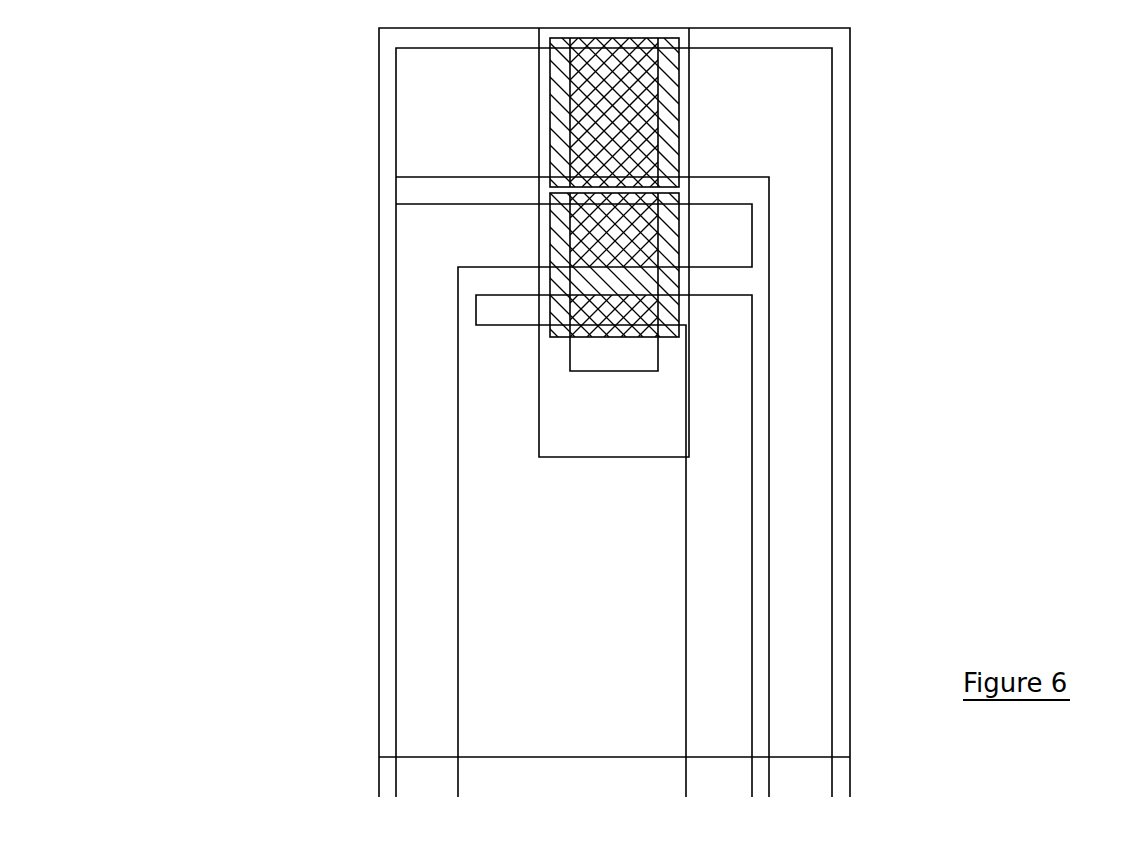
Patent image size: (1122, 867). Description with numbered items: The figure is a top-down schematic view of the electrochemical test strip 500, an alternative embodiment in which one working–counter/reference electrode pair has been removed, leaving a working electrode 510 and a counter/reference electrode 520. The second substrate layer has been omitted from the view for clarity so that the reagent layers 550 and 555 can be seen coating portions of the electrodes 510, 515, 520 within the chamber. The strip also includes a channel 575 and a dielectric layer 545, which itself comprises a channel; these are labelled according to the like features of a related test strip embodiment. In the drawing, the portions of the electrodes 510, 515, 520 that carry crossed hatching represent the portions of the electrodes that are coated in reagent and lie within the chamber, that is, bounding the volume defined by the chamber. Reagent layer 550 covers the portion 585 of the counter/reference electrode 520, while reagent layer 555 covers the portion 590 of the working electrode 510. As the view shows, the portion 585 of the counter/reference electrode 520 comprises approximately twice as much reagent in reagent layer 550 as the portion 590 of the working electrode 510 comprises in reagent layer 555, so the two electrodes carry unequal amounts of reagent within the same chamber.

The test strip 500 is at (153, 651).
The working electrode 510 is at (425, 594).
The electrode 515 is at (718, 609).
The counter/reference electrode 520 is at (770, 118).
The dielectric layer 545 is at (605, 355).
The reagent layer 550 is at (560, 157).
The reagent layer 555 is at (680, 281).
The channel 575 is at (578, 430).
The portion of counter/reference electrode 585 is at (607, 125).
The portion of working electrode 590 is at (643, 239).